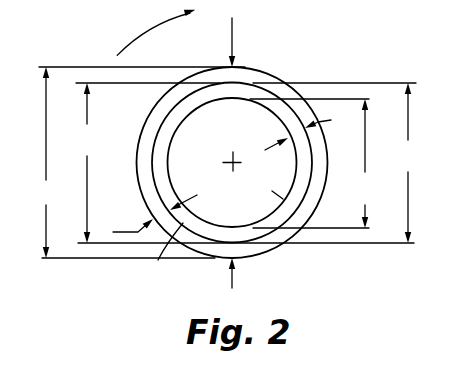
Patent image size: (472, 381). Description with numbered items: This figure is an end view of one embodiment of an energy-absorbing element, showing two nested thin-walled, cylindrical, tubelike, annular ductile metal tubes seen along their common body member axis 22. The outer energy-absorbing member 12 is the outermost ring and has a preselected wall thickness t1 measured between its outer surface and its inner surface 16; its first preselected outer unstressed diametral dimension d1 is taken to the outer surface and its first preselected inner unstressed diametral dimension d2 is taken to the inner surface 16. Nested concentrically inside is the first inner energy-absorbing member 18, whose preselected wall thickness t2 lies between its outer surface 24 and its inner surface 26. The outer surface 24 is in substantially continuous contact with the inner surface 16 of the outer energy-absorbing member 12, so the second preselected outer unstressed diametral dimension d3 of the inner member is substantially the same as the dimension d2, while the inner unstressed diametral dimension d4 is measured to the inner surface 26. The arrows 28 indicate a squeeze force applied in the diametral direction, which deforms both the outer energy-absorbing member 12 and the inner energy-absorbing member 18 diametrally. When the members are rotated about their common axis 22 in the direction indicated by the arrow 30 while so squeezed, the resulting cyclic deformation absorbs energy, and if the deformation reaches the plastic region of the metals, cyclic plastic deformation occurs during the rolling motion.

The outer energy-absorbing member 12 is at (279, 246).
The inner surface 16 is at (233, 80).
The first inner energy-absorbing member 18 is at (267, 92).
The common body member axis 22 is at (232, 157).
The outer surface 24 is at (158, 260).
The inner surface 26 is at (266, 186).
The arrows 28 is at (232, 18).
The arrow 30 is at (163, 21).
The first preselected outer unstressed diametral dimension d1 is at (141, 162).
The first preselected inner unstressed diametral dimension d2 is at (245, 163).
The second preselected outer unstressed diametral dimension d3 is at (335, 163).
The inner unstressed diametral dimension d4 is at (311, 163).
The wall thickness t1 is at (150, 213).
The wall thickness t2 is at (309, 130).